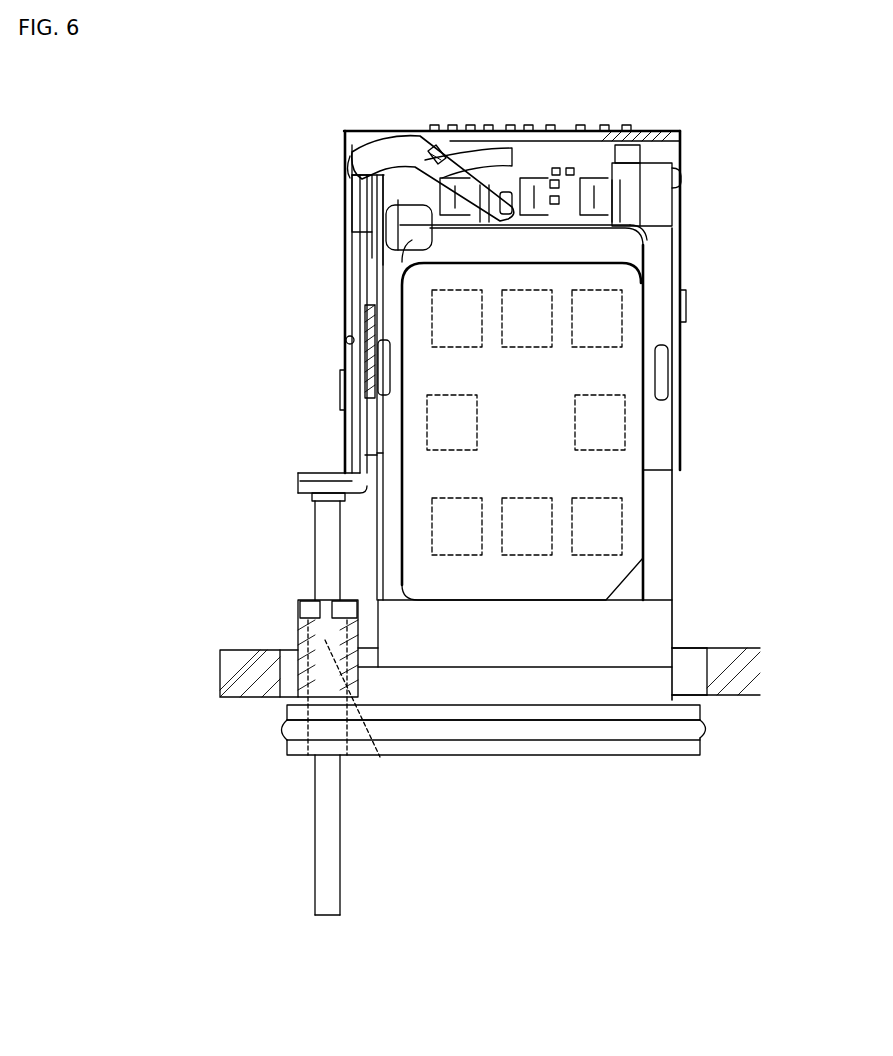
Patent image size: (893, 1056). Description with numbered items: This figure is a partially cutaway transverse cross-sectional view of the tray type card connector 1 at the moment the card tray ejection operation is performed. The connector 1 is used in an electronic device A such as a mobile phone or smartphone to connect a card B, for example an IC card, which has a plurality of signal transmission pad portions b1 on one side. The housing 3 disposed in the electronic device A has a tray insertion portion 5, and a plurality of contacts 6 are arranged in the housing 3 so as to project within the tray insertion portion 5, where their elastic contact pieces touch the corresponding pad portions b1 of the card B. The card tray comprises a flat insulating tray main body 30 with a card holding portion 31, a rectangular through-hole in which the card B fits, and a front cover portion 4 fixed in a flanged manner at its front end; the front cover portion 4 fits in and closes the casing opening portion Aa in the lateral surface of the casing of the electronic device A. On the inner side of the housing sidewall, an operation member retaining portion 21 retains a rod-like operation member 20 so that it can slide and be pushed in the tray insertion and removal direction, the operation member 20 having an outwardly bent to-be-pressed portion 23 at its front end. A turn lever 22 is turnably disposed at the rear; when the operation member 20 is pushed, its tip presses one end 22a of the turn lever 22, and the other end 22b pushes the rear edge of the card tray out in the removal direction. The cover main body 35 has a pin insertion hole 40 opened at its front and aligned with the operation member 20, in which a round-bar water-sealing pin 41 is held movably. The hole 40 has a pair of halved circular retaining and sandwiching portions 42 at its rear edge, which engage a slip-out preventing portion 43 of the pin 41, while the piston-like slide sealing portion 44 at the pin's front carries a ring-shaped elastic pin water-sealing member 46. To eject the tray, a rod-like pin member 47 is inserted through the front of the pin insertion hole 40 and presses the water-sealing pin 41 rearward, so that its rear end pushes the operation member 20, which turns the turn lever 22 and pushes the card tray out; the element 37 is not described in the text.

The tray type card connector 1 is at (336, 126).
The housing 3 is at (692, 128).
The front cover portion 4 is at (645, 762).
The tray insertion portion 5 is at (670, 206).
The contacts 6 is at (540, 184).
The operation member 20 is at (346, 284).
The operation member retaining portion 21 is at (360, 355).
The turn lever 22 is at (470, 150).
The one end of turn lever 22a is at (346, 172).
The other end of turn lever 22b is at (505, 130).
The to-be-pressed portion 23 is at (298, 482).
The tray main body 30 is at (662, 286).
The card holding portion 31 is at (688, 306).
The cover main body 35 is at (556, 757).
The upper plate 37 is at (456, 742).
The pin insertion hole 40 is at (292, 698).
The water-sealing pin 41 is at (326, 528).
The retaining and sandwiching portions 42 is at (304, 604).
The slip-out preventing portion 43 is at (312, 497).
The slide sealing portion 44 is at (380, 757).
The pin water-sealing member 46 is at (297, 632).
The pin member 47 is at (318, 850).
The electronic device A is at (752, 690).
The casing opening portion Aa is at (696, 680).
The card B is at (625, 385).
The signal transmission pad portions b1 is at (680, 350).